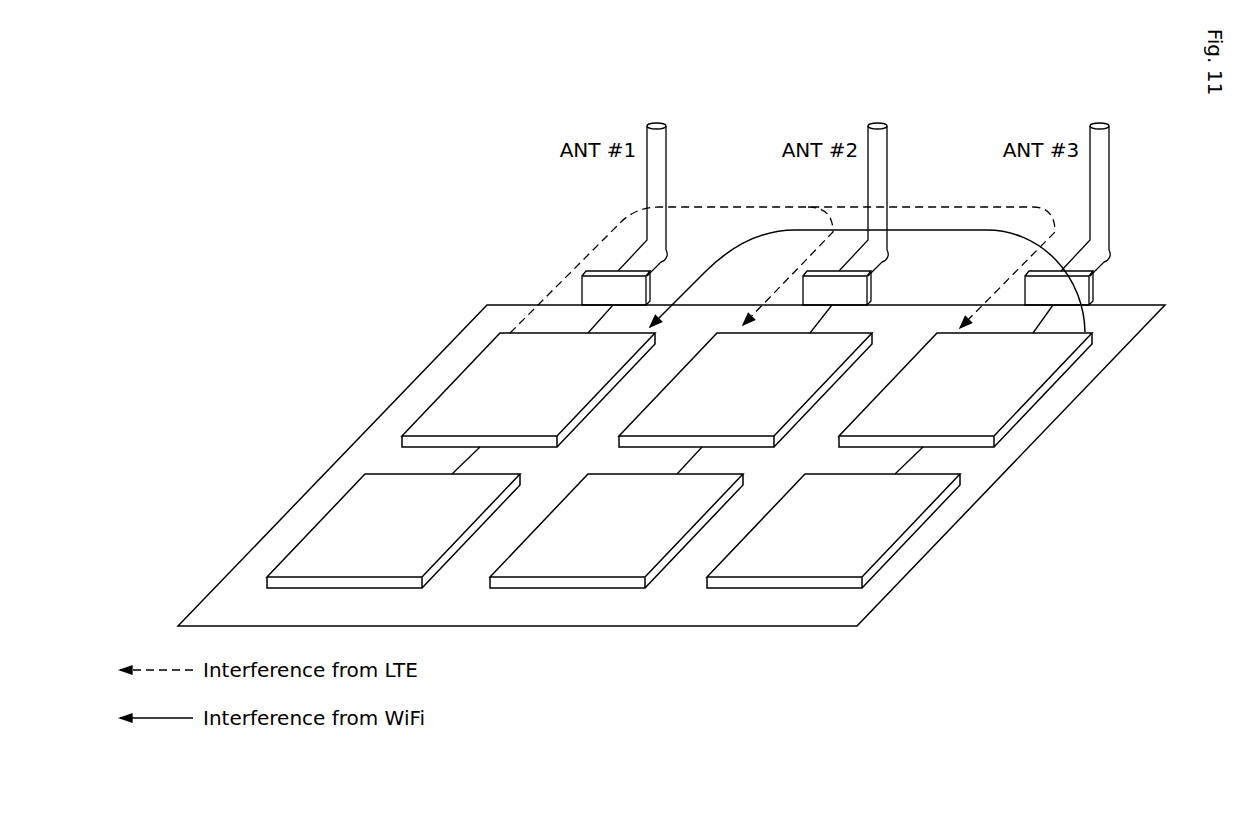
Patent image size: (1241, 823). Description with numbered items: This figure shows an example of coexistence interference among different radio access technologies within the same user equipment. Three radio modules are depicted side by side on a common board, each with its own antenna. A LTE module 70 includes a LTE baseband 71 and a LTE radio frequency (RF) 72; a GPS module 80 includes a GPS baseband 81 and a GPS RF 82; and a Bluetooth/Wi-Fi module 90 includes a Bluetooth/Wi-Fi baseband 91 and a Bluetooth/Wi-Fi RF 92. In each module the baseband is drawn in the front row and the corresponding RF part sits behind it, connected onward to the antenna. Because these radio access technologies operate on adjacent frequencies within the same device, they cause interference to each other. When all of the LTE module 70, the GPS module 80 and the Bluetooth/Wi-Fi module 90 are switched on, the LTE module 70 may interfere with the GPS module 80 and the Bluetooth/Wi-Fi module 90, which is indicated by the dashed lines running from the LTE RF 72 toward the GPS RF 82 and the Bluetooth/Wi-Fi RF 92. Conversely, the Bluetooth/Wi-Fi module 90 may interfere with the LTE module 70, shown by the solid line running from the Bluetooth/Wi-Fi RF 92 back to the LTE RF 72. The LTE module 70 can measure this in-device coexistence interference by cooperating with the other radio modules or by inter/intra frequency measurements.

The LTE module 70 is at (420, 475).
The LTE baseband 71 is at (317, 522).
The LTE radio frequency (RF) 72 is at (452, 383).
The GPS module 80 is at (681, 507).
The GPS baseband 81 is at (528, 568).
The GPS RF 82 is at (640, 421).
The Bluetooth/Wi-Fi module 90 is at (930, 475).
The Bluetooth/Wi-Fi baseband 91 is at (905, 513).
The Bluetooth/Wi-Fi RF 92 is at (1040, 374).